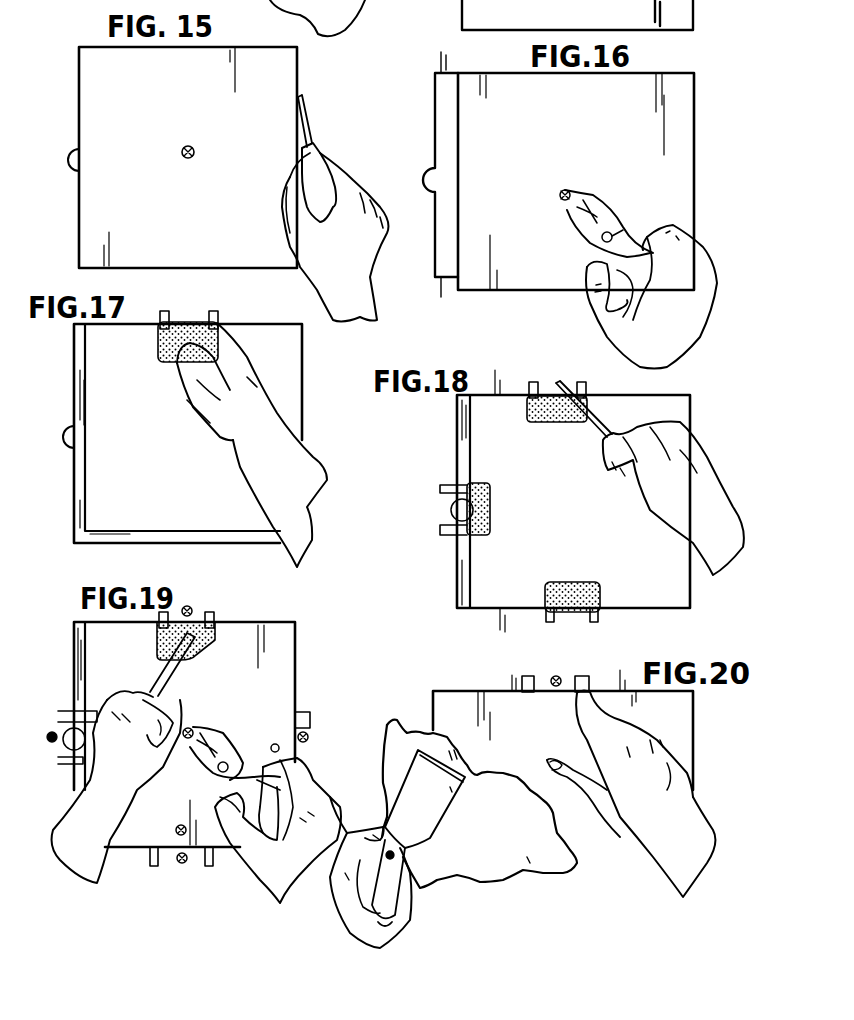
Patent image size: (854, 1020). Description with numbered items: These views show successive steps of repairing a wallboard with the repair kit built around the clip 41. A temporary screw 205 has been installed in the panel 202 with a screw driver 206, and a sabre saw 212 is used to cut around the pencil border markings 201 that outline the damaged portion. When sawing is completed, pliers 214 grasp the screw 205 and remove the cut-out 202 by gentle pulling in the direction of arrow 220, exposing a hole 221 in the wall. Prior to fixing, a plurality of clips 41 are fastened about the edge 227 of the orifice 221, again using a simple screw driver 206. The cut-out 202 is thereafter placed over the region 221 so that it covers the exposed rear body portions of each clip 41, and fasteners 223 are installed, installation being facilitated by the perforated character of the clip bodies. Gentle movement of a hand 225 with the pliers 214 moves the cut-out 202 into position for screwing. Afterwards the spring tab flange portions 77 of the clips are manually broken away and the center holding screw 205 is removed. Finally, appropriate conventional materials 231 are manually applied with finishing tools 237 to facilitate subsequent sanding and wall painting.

In FIG. 17, the clip 41 is at (152, 340).
In FIG. 18, the clip 41 is at (525, 408).
In FIG. 19, the clip 41 is at (182, 739).
In FIG. 19, the spring tab flange portions 77 is at (303, 714).
In FIG. 20, the spring tab flange portions 77 is at (520, 684).
In FIG. 15, the markings 201 is at (128, 128).
In FIG. 16, the panel 202 is at (676, 128).
In FIG. 19, the panel 202 is at (273, 650).
In FIG. 15, the screw 205 is at (200, 132).
In FIG. 16, the screw 205 is at (565, 192).
In FIG. 19, the screw 205 is at (190, 722).
In FIG. 18, the screw driver 206 is at (598, 440).
In FIG. 15, the screwdriver 212 is at (321, 168).
In FIG. 16, the pliers 214 is at (620, 232).
In FIG. 19, the pliers 214 is at (215, 777).
In FIG. 16, the arrow 220 is at (530, 297).
In FIG. 16, the hole 221 is at (452, 210).
In FIG. 17, the hole 221 is at (288, 372).
In FIG. 18, the hole 221 is at (490, 570).
In FIG. 19, the hole 221 is at (110, 662).
In FIG. 19, the fasteners 223 is at (200, 590).
In FIG. 20, the fasteners 223 is at (558, 677).
In FIG. 19, the hand 225 is at (306, 866).
In FIG. 17, the edge 227 is at (215, 532).
In FIG. 20, the conventional materials 231 is at (506, 800).
In FIG. 20, the finishing tools 237 is at (424, 824).